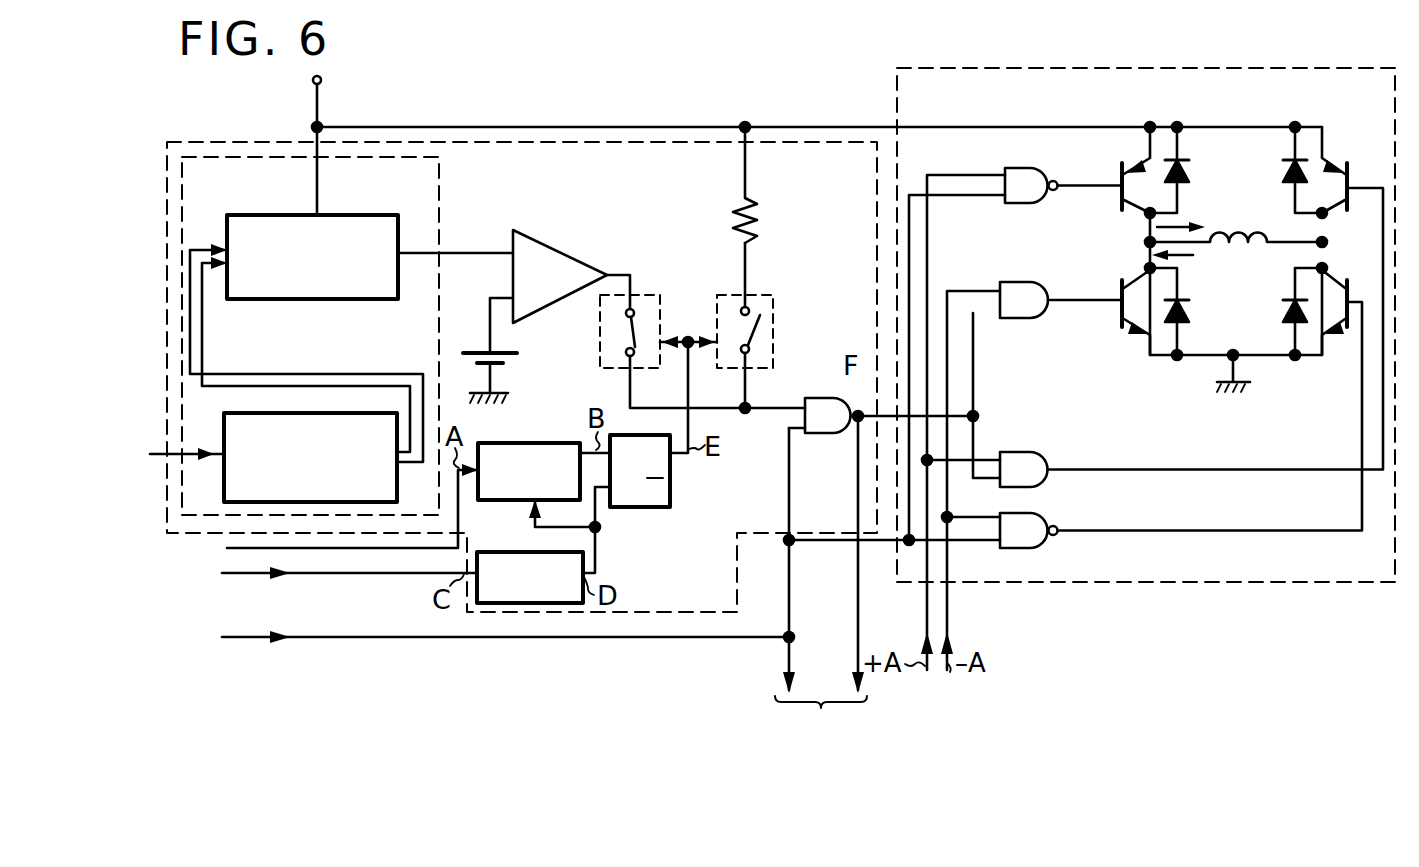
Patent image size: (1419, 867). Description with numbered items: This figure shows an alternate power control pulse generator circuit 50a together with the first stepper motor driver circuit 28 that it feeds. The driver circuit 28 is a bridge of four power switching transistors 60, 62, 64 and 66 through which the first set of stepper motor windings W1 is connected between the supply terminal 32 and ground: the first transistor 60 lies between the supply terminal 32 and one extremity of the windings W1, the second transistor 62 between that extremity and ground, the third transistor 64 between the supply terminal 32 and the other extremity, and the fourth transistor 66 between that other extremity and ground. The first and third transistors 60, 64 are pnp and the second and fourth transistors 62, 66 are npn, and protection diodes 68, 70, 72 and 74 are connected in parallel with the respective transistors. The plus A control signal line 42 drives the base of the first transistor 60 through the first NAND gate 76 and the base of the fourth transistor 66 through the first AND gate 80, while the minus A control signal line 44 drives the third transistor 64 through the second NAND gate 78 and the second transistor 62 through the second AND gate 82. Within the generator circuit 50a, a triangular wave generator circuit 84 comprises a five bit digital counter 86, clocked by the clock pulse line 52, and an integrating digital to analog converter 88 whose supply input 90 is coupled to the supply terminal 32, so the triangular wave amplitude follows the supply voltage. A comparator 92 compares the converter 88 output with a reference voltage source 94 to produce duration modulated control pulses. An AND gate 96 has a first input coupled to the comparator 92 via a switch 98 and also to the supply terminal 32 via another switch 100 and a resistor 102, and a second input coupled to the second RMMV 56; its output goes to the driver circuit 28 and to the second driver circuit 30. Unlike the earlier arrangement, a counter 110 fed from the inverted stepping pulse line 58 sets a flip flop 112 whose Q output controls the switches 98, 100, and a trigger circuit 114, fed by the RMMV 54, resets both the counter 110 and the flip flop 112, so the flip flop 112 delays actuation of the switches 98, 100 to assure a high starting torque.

The first stepper motor driver circuit 28 is at (895, 112).
The second stepper motor driver circuit 30 is at (826, 594).
The supply terminal 32 is at (322, 82).
The plus A control signal line 42 is at (927, 640).
The minus A control signal line 44 is at (950, 640).
The alternate power control pulse generator circuit 50a is at (205, 140).
The clock pulse line 52 is at (163, 459).
The RMMV 54 is at (322, 587).
The second RMMV 56 is at (478, 651).
The inverted stepping pulse line 58 is at (228, 548).
The first transistor 60 is at (1122, 172).
The second transistor 62 is at (1120, 310).
The third transistor 64 is at (1349, 176).
The fourth transistor 66 is at (1345, 308).
The protection diode 68 is at (1200, 150).
The protection diode 70 is at (1192, 284).
The protection diode 72 is at (1286, 156).
The protection diode 74 is at (1288, 300).
The first NAND gate 76 is at (1022, 168).
The second NAND gate 78 is at (1003, 549).
The first AND gate 80 is at (1016, 452).
The second AND gate 82 is at (1018, 282).
The triangular wave generator circuit 84 is at (442, 228).
The five bit digital counter 86 is at (397, 472).
The integrating digital to analog converter 88 is at (347, 214).
The supply input 90 is at (311, 214).
The comparator 92 is at (566, 254).
The reference voltage source 94 is at (486, 352).
The AND gate 96 is at (857, 406).
The switch 98 is at (649, 294).
The switch 100 is at (760, 293).
The resistor 102 is at (757, 222).
The counter 110 is at (520, 443).
The flip flop 112 is at (640, 509).
The trigger circuit 114 is at (502, 552).
The first set of stepper motor windings W1 is at (1235, 238).